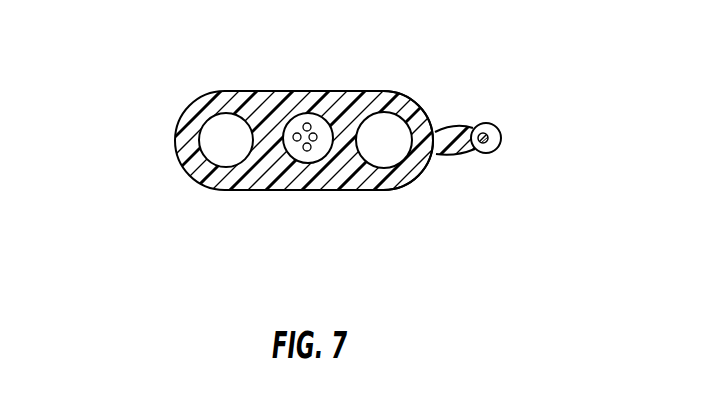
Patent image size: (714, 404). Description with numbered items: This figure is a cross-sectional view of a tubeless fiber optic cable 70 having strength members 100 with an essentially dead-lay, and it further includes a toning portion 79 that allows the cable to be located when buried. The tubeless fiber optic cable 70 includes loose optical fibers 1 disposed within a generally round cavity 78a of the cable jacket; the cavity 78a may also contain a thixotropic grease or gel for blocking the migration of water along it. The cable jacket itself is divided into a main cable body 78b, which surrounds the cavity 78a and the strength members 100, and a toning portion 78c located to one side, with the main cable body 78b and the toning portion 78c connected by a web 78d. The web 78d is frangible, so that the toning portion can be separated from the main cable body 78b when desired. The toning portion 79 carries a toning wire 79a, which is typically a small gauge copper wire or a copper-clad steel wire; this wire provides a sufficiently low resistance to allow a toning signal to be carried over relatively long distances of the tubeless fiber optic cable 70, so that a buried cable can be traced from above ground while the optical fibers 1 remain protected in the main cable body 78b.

The tubeless fiber optic cable 70 is at (104, 81).
The cavity 78a is at (284, 140).
The optical fibers 1 is at (317, 135).
The main cable body 78b is at (435, 203).
The toning portion 78c is at (501, 178).
The web 78d is at (436, 138).
The toning portion 79 is at (471, 122).
The toning wire 79a is at (490, 133).
The strength members 100 is at (209, 152).